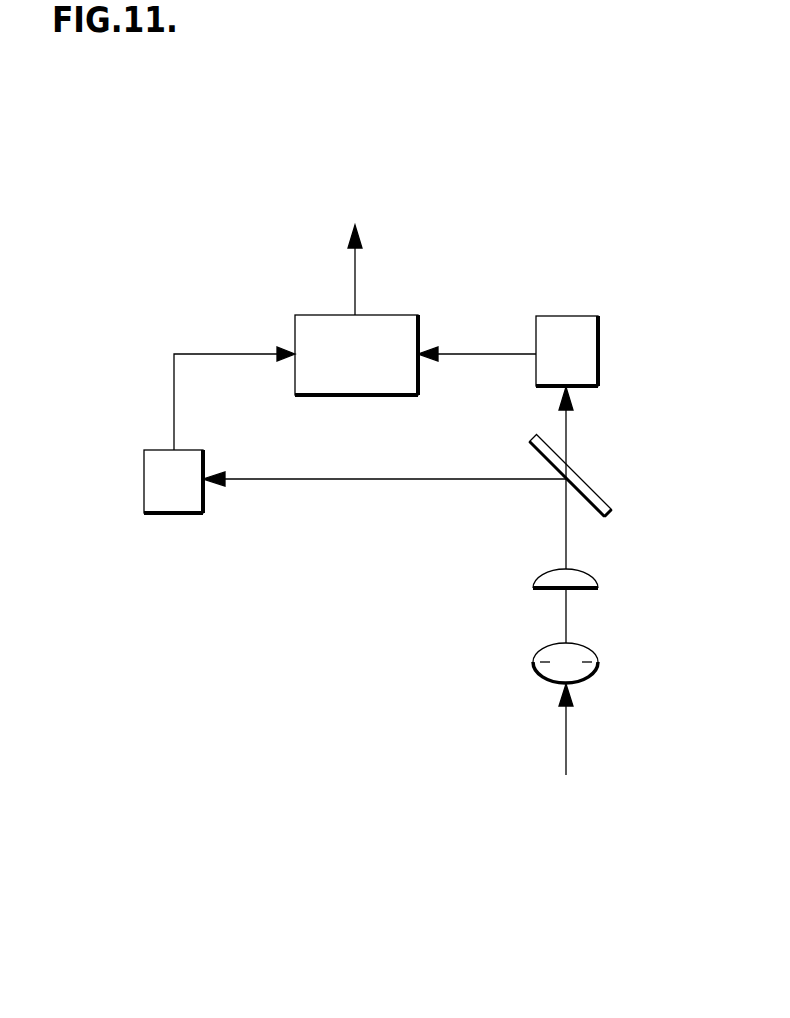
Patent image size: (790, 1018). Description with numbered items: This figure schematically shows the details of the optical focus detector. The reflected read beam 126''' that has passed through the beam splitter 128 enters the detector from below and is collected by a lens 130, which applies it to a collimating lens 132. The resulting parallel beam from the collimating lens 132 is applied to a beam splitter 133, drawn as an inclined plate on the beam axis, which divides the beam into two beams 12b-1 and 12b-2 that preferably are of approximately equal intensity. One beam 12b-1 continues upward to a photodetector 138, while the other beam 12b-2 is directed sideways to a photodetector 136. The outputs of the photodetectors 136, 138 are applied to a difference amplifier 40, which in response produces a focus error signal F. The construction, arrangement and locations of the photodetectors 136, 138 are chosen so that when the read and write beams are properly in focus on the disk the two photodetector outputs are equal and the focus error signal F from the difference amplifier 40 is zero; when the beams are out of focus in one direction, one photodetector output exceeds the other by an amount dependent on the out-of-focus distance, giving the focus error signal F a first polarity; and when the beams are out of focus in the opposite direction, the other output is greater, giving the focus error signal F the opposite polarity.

The difference amplifier 40 is at (398, 397).
The photodetector 138 is at (575, 320).
The photodetector 136 is at (176, 504).
The beam 12b-1 is at (566, 423).
The beam 12b-2 is at (422, 479).
The beam splitter 133 is at (600, 495).
The collimating lens 132 is at (590, 578).
The lens 130 is at (598, 670).
The beam 126''' is at (619, 729).
The beam splitter 128 is at (594, 858).
The focus error signal F is at (352, 283).